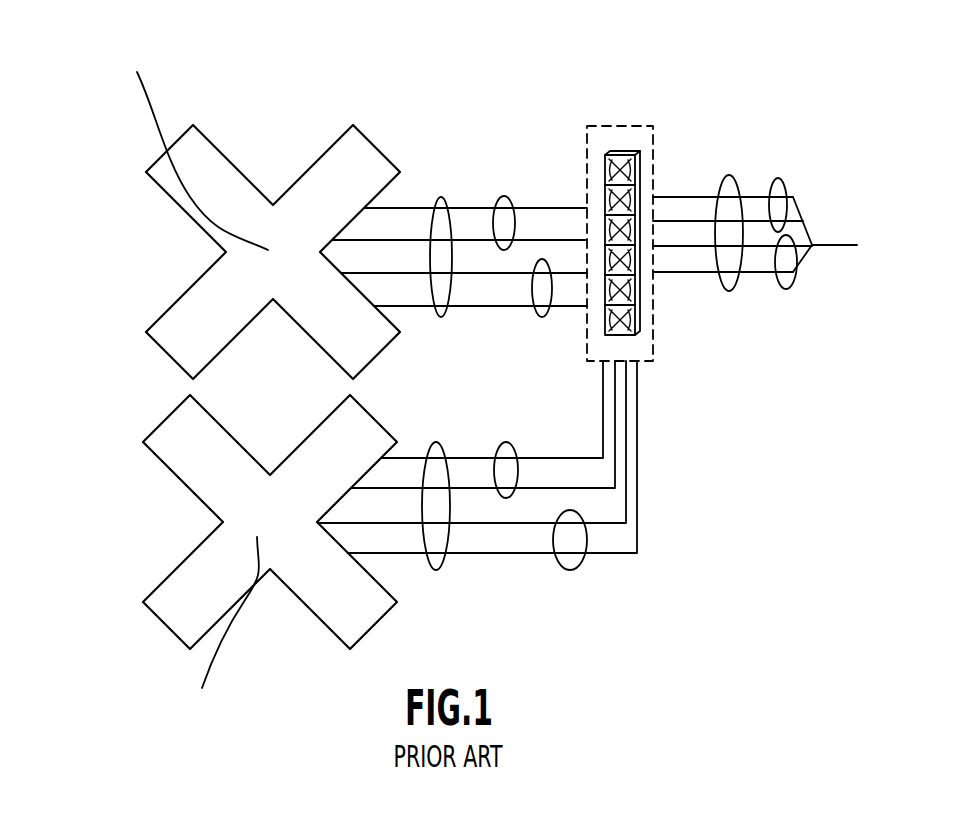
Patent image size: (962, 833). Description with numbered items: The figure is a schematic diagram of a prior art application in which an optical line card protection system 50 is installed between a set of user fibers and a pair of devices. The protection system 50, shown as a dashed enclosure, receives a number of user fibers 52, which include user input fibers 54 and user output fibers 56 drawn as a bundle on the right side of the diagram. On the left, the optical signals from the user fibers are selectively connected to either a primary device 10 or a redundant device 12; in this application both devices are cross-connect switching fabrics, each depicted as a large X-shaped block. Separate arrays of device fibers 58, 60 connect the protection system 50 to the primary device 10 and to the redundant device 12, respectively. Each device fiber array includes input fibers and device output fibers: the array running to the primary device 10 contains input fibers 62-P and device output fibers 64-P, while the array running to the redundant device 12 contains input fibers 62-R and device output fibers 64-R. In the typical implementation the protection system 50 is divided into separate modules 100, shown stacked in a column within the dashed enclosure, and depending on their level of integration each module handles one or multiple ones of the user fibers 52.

The primary device 10 is at (212, 142).
The redundant device 12 is at (362, 635).
The optical line card protection system 50 is at (623, 125).
The modules 100 is at (641, 193).
The user fibers 52 is at (733, 292).
The user input fibers 54 is at (782, 182).
The user output fibers 56 is at (795, 283).
The device fibers 58 is at (448, 205).
The device fibers 60 is at (438, 445).
The input fibers 62-P is at (507, 202).
The device output fibers 64-P is at (543, 317).
The input fibers 62-R is at (508, 445).
The device output fibers 64-R is at (573, 568).